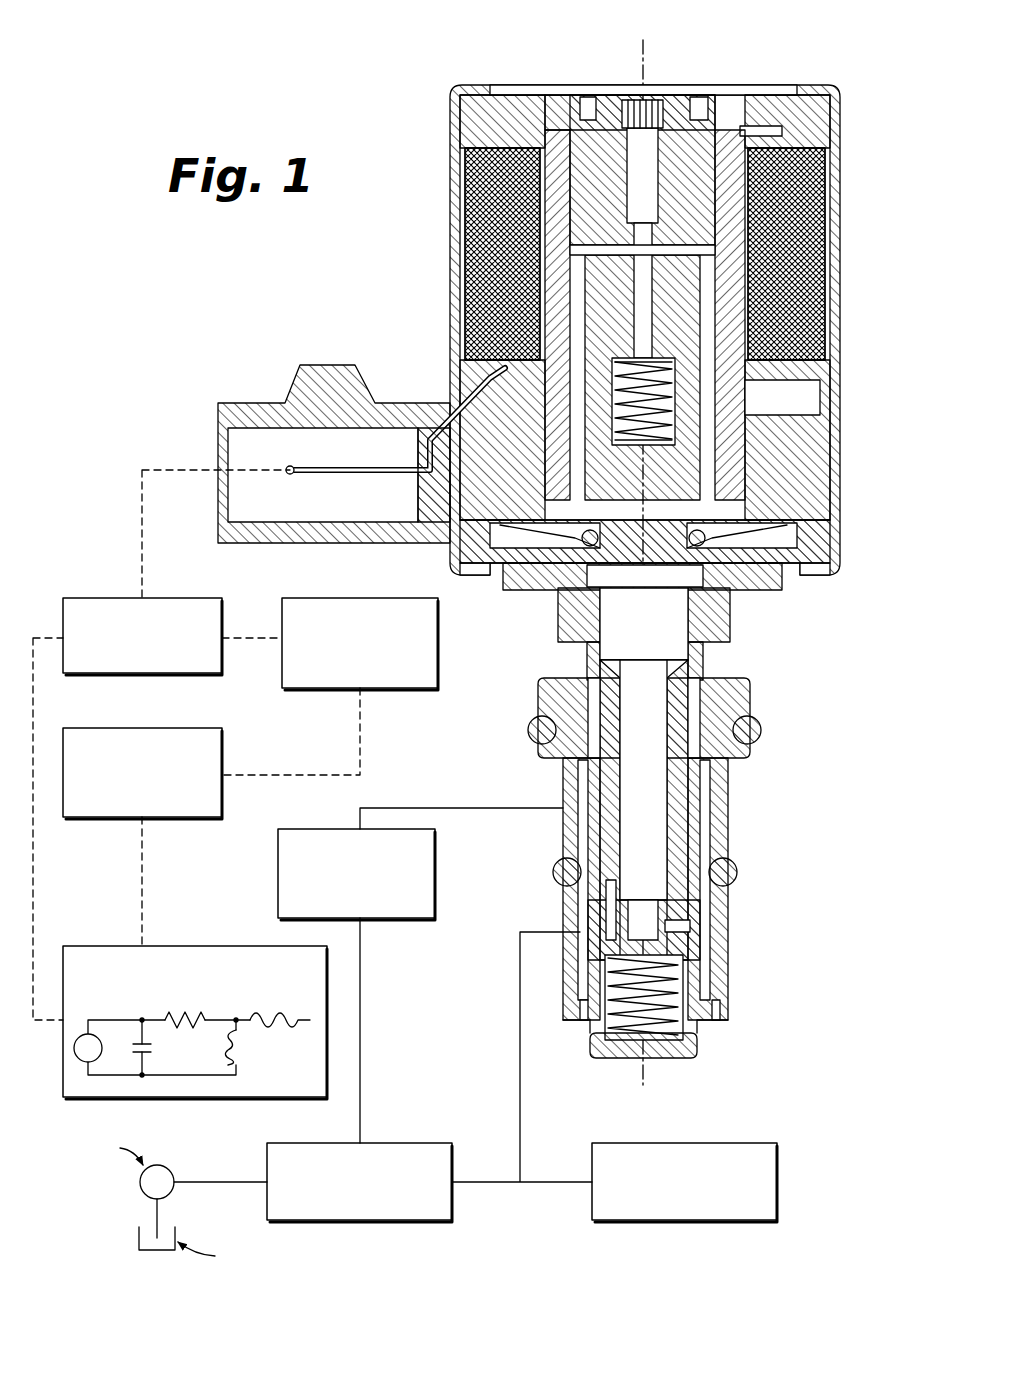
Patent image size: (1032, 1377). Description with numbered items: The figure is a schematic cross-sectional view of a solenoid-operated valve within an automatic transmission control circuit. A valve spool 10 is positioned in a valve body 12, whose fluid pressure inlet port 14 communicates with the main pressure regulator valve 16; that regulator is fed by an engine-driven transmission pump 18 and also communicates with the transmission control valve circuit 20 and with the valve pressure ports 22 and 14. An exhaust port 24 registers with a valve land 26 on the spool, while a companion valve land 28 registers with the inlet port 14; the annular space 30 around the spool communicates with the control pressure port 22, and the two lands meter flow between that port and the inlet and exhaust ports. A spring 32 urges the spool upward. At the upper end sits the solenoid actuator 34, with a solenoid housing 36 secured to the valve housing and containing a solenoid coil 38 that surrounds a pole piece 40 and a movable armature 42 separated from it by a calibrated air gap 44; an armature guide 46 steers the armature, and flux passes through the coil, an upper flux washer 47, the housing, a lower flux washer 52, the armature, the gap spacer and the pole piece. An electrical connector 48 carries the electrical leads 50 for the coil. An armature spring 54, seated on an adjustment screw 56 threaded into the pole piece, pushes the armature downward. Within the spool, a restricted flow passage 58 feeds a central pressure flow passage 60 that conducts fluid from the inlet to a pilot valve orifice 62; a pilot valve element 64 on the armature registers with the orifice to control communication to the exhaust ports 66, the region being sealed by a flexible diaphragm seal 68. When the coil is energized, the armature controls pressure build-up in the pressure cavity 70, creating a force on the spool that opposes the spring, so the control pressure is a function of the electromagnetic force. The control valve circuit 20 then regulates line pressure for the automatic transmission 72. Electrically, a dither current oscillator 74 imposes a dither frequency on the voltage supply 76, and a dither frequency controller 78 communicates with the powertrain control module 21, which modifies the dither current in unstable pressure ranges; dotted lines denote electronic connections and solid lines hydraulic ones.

The valve spool 10 is at (602, 860).
The valve body 12 is at (545, 692).
The fluid pressure inlet port 14 is at (582, 936).
The main pressure regulator valve 16 is at (437, 1143).
The transmission pump 18 is at (142, 1190).
The transmission control valve circuit 20 is at (278, 862).
The powertrain control module 21 is at (332, 690).
The control pressure port 22 is at (565, 828).
The exhaust port 24 is at (578, 660).
The valve land 26 is at (705, 665).
The companion valve land 28 is at (722, 916).
The annular space 30 is at (588, 760).
The spring 32 is at (700, 1020).
The solenoid actuator 34 is at (452, 82).
The solenoid housing 36 is at (452, 100).
The solenoid coil 38 is at (838, 348).
The pole piece 40 is at (660, 118).
The movable armature 42 is at (780, 402).
The calibrated air gap 44 is at (780, 212).
The armature guide 46 is at (790, 302).
The upper flux washer 47 is at (758, 112).
The electrical connector 48 is at (246, 412).
The electrical leads 50 is at (330, 470).
The lower flux washer 52 is at (470, 500).
The armature spring 54 is at (535, 330).
The adjustment screw 56 is at (600, 212).
The restricted flow passage 58 is at (690, 942).
The central pressure flow passage 60 is at (660, 718).
The pilot valve orifice 62 is at (668, 540).
The pilot valve element 64 is at (627, 540).
The exhaust ports 66 is at (545, 590).
The flexible diaphragm seal 68 is at (785, 498).
The pressure cavity 70 is at (700, 628).
The automatic transmission 72 is at (740, 1143).
The dither current oscillator 74 is at (118, 944).
The voltage supply 76 is at (105, 596).
The dither frequency controller 78 is at (118, 820).